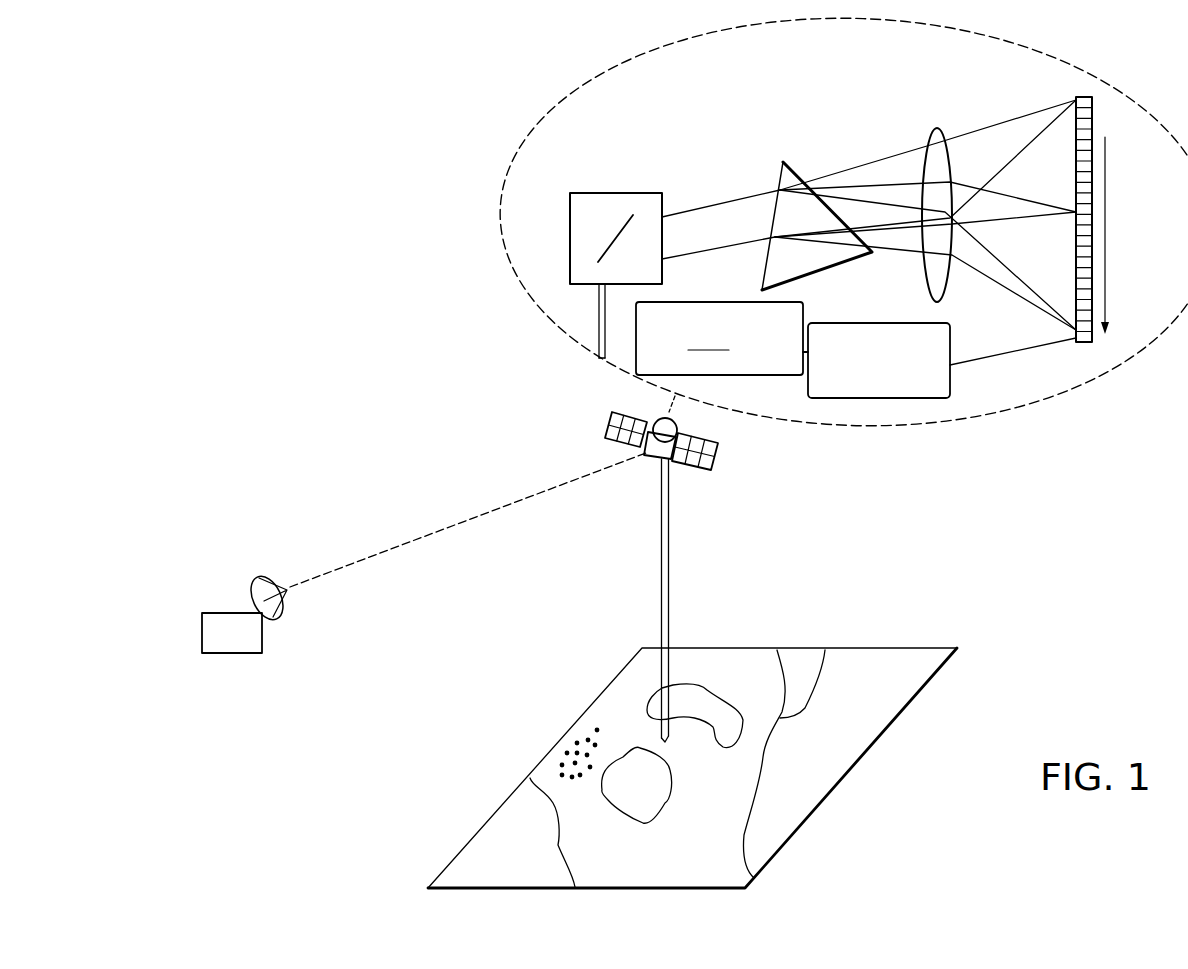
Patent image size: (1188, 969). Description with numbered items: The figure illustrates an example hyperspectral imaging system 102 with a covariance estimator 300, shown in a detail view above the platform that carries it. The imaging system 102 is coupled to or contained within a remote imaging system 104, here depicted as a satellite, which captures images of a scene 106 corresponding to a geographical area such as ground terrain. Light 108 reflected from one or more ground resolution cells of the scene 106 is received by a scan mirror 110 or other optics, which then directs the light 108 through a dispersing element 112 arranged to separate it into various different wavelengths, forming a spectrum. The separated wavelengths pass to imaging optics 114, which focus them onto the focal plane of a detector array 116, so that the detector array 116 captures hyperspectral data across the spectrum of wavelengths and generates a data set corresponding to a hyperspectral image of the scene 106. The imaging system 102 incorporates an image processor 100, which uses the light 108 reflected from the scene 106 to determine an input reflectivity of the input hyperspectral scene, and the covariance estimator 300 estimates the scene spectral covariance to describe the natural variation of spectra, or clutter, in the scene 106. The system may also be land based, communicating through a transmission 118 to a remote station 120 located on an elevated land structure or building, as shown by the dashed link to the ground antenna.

The image processor 100 is at (930, 400).
The imaging system 102 is at (1025, 405).
The remote imaging system 104 is at (713, 463).
The scene 106 is at (544, 757).
The light 108 is at (598, 320).
The scan mirror 110 is at (618, 192).
The dispersing element 112 is at (792, 173).
The imaging optics 114 is at (936, 126).
The detector array 116 is at (1078, 95).
The transmission 118 is at (455, 523).
The remote station 120 is at (218, 612).
The covariance estimator 300 is at (719, 338).